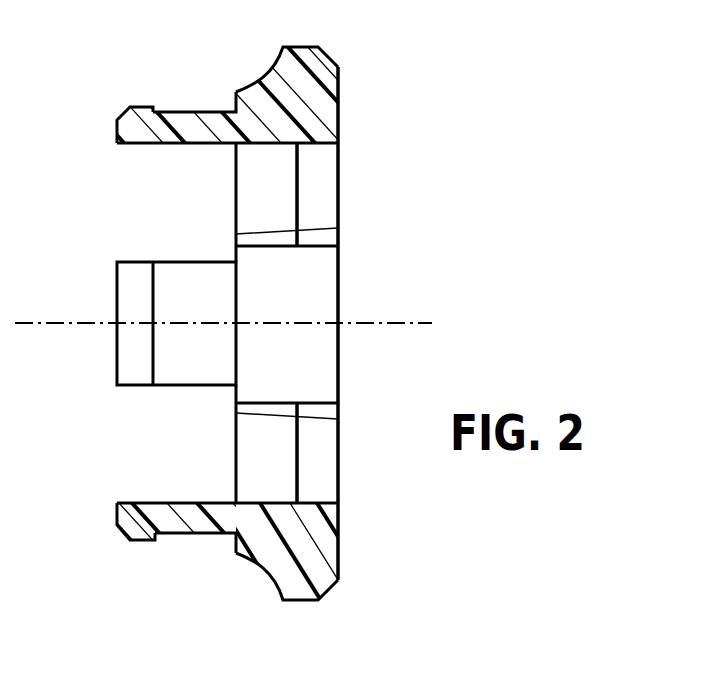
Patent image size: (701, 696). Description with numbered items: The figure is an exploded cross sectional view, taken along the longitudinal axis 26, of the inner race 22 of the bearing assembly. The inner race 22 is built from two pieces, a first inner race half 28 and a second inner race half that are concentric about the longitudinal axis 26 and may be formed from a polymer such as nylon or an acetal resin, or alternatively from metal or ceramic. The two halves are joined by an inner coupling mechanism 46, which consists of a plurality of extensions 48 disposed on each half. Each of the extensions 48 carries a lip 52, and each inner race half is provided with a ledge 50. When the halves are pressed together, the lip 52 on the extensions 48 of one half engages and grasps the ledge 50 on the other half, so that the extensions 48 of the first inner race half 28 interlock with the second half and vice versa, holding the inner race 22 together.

The inner race 22 is at (266, 74).
The longitudinal axis 26 is at (425, 323).
The first inner race half 28 is at (395, 315).
The inner coupling mechanism 46 is at (132, 95).
The extensions 48 is at (147, 144).
The ledge 50 is at (298, 200).
The lip 52 is at (156, 109).